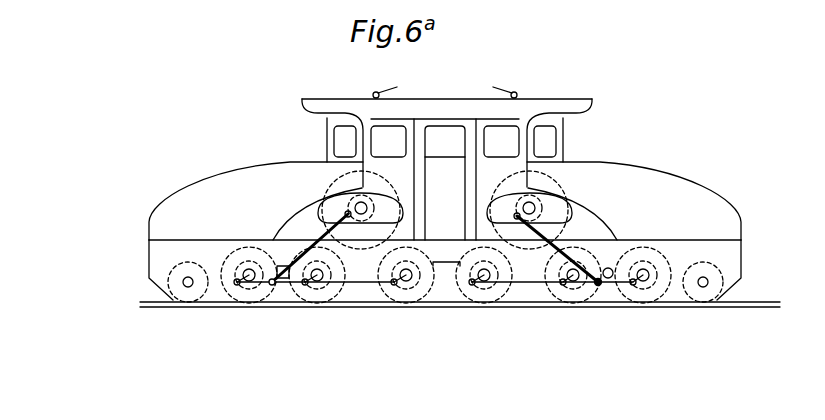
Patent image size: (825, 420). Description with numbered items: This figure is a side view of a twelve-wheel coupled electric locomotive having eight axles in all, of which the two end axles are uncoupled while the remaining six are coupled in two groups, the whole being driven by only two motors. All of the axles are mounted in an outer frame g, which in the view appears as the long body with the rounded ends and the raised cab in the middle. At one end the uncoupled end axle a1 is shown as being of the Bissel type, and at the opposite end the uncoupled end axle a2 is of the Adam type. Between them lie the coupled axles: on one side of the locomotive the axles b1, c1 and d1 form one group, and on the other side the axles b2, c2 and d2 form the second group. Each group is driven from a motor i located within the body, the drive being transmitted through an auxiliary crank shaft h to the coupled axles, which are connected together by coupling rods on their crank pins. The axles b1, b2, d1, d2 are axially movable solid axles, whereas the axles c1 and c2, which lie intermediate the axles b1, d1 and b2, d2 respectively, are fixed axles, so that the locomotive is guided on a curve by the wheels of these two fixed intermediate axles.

The end axle a1 is at (703, 290).
The end axle a2 is at (187, 288).
The axially movable solid axle b1 is at (485, 287).
The axially movable solid axle b2 is at (405, 288).
The fixed axle c1 is at (570, 290).
The fixed axle c2 is at (317, 288).
The axially movable solid axle d1 is at (643, 290).
The axially movable solid axle d2 is at (248, 288).
The outer frame g is at (160, 247).
The auxiliary crank shaft h is at (281, 266).
The driving motor i is at (343, 183).